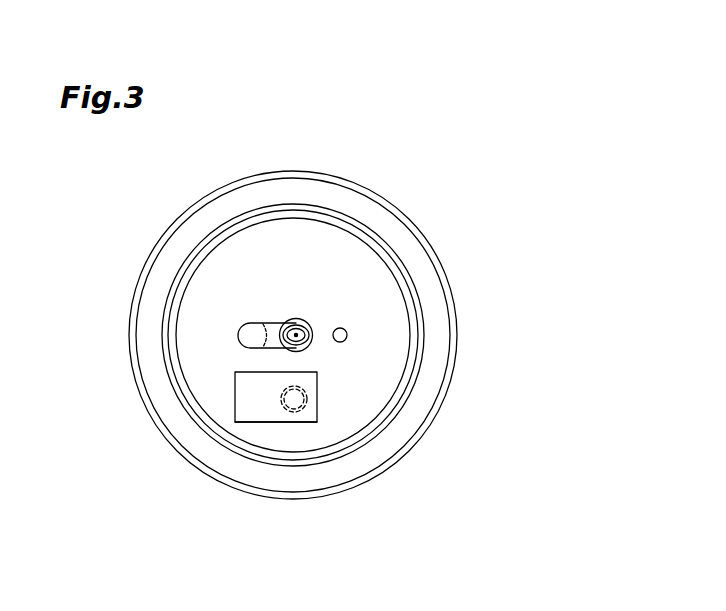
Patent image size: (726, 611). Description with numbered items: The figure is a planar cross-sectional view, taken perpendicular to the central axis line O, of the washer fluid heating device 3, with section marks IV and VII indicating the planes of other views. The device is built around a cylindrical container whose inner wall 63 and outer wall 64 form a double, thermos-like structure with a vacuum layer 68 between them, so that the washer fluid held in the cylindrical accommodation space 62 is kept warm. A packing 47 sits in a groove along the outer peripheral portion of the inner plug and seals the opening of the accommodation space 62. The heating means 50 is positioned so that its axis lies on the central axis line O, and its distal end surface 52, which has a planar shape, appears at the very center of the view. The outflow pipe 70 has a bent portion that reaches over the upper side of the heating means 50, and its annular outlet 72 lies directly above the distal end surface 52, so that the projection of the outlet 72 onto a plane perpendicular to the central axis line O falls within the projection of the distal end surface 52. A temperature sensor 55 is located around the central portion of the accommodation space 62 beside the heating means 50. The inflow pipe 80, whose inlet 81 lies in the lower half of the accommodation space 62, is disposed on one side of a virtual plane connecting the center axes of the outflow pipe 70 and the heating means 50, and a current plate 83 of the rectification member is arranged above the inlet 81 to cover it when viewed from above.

The washer fluid heating device 3 is at (426, 152).
The packing 47 is at (362, 440).
The heating means 50 is at (291, 318).
The distal end surface 52 is at (286, 319).
The temperature sensor 55 is at (347, 333).
The accommodation space 62 is at (330, 241).
The inner wall 63 is at (395, 249).
The outer wall 64 is at (428, 237).
The vacuum layer 68 is at (408, 434).
The outflow pipe 70 is at (252, 326).
The outlet 72 is at (311, 326).
The inflow pipe 80 is at (273, 423).
The inlet 81 is at (280, 413).
The current plate 83 is at (257, 423).
The central axis line O is at (296, 335).
The section line IV is at (121, 337).
The section line VII is at (121, 435).